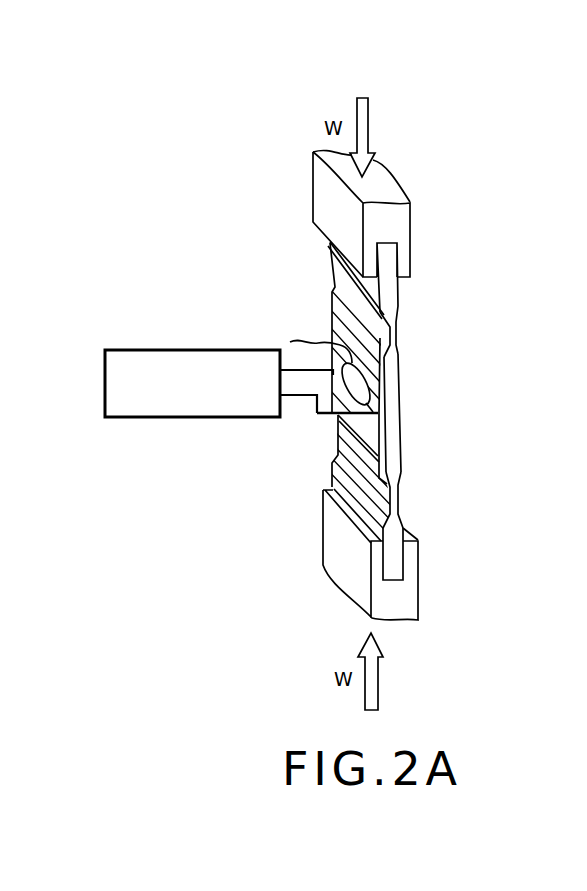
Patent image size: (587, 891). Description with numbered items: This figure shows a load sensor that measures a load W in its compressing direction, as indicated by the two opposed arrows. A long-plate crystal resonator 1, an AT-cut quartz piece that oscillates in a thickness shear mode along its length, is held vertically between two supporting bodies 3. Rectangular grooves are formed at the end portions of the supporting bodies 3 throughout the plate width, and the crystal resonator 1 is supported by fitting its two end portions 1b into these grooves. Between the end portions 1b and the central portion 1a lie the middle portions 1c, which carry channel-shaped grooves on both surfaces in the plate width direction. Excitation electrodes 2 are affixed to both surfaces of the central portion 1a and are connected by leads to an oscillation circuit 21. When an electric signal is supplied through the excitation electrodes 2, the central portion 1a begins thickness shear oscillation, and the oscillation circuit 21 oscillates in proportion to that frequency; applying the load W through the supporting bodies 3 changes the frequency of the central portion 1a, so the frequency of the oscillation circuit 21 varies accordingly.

The crystal resonator 1 is at (401, 411).
The central portion 1a is at (400, 420).
The end portions 1b is at (391, 270).
The middle portions 1c is at (394, 328).
The excitation electrodes 2 is at (331, 383).
The supporting bodies 3 is at (410, 223).
The oscillation circuit 21 is at (200, 348).